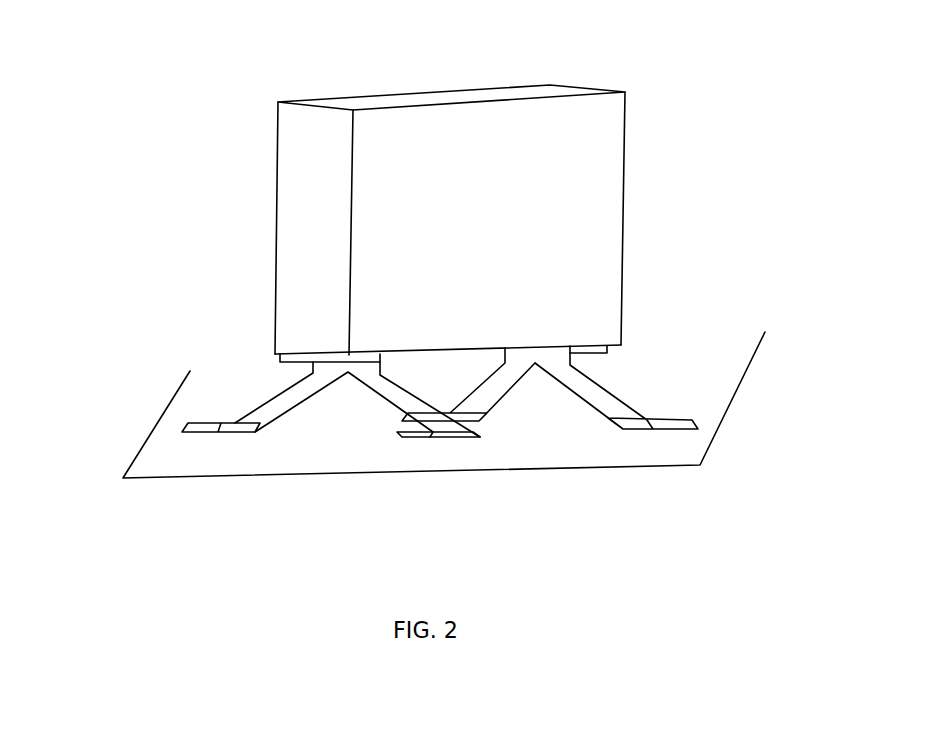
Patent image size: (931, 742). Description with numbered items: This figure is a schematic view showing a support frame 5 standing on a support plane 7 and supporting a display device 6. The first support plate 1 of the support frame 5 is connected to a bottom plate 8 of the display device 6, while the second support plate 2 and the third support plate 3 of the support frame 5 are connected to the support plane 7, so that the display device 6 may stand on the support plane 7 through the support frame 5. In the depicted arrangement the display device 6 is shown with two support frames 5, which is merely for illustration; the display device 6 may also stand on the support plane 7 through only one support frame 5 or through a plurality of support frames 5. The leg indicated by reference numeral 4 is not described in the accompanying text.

The first support plate 1 is at (310, 355).
The second support plate 2 is at (238, 425).
The third support plate 3 is at (443, 433).
The first elastic support leg 4 is at (288, 396).
The support frame 5 is at (607, 375).
The display device 6 is at (294, 228).
The support plane 7 is at (210, 402).
The bottom plate 8 is at (476, 341).